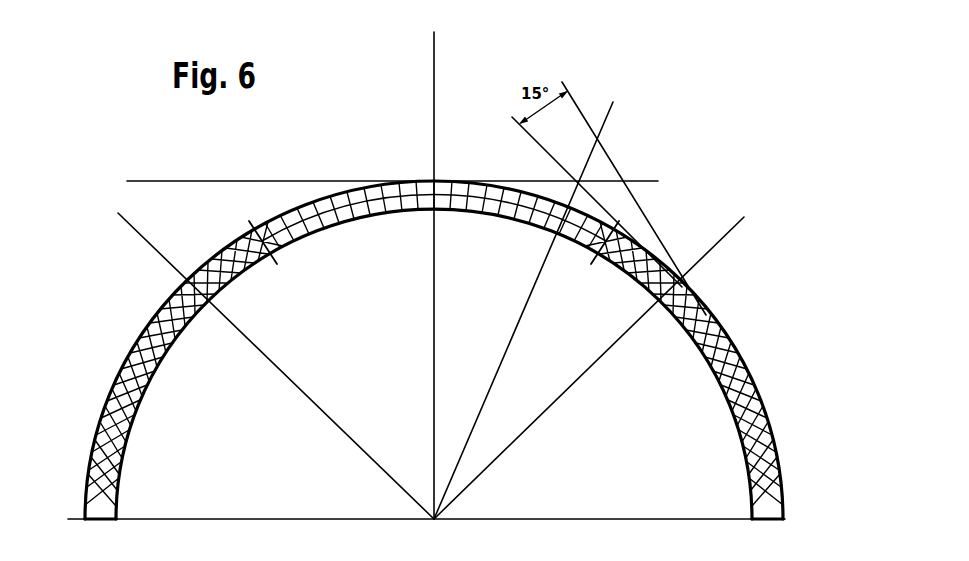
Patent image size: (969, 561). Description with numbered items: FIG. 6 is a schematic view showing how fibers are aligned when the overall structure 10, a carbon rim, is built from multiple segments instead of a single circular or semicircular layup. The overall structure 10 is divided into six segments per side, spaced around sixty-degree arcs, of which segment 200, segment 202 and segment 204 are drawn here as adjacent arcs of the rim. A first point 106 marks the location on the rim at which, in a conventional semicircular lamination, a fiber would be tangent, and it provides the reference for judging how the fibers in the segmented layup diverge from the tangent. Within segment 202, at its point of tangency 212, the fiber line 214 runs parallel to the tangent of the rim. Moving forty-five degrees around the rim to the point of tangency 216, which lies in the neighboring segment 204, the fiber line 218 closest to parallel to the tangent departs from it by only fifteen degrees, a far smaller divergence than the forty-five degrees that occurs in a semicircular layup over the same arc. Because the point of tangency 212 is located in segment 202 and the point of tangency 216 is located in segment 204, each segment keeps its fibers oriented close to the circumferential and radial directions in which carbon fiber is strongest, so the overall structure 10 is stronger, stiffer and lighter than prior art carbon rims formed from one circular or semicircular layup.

The overall structure 10 is at (133, 346).
The first point 106 is at (187, 282).
The segment 200 is at (138, 400).
The segment 202 is at (390, 221).
The segment 204 is at (735, 421).
The point of tangency 212 is at (432, 181).
The fiber line 214 is at (287, 182).
The point of tangency 216 is at (682, 282).
The fiber line 218 is at (640, 205).